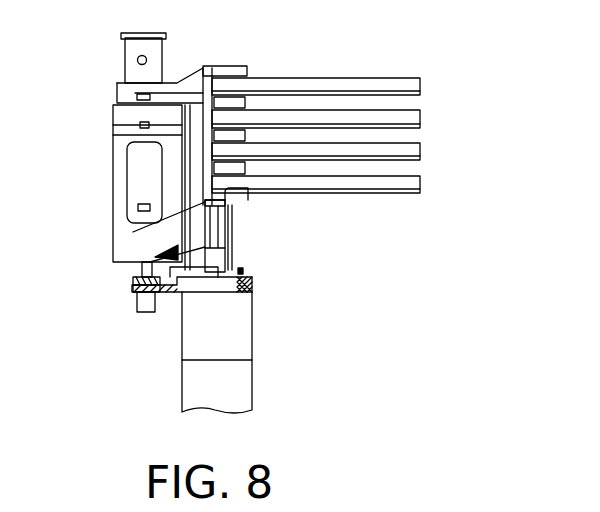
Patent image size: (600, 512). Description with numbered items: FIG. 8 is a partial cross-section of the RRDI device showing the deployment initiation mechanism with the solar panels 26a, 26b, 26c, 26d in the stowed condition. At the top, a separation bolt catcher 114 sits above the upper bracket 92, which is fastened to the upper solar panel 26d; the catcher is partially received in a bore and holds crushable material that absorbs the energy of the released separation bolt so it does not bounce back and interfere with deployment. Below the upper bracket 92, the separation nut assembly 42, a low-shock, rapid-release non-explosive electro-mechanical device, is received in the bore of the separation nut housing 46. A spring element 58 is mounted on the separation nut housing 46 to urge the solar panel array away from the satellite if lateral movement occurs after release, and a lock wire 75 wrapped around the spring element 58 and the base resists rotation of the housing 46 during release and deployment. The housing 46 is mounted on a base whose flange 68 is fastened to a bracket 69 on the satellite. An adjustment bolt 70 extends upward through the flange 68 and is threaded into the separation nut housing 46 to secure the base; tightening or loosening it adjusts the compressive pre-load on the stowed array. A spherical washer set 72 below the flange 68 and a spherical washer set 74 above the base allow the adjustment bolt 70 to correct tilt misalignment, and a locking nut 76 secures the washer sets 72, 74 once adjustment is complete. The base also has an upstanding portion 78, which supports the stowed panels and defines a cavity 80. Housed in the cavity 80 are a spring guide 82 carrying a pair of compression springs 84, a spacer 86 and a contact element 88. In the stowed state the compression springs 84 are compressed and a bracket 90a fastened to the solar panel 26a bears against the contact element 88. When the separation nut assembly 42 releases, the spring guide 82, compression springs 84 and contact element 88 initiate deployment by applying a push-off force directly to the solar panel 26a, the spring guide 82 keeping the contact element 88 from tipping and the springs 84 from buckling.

The separation bolt catcher 114 is at (158, 54).
The upper bracket 92 is at (120, 86).
The spring element 58 is at (115, 137).
The separation nut assembly 42 is at (130, 173).
The separation nut housing 46 is at (113, 200).
The bracket 90a is at (117, 228).
The adjustment bolt 70 is at (135, 262).
The lock wire 75 is at (137, 269).
The locking nut 76 is at (135, 279).
The spherical washer set 74 is at (143, 284).
The spherical washer set 72 is at (140, 308).
The flange 68 is at (185, 297).
The cavity 80 is at (185, 317).
The bracket 69 is at (190, 395).
The compression springs 84 is at (222, 287).
The spacer 86 is at (250, 305).
The spring guide 82 is at (233, 212).
The contact element 88 is at (232, 222).
The upstanding portion 78 is at (237, 212).
The solar panel 26a is at (418, 185).
The solar panel 26b is at (417, 150).
The solar panel 26c is at (415, 120).
The solar panel 26d is at (418, 85).